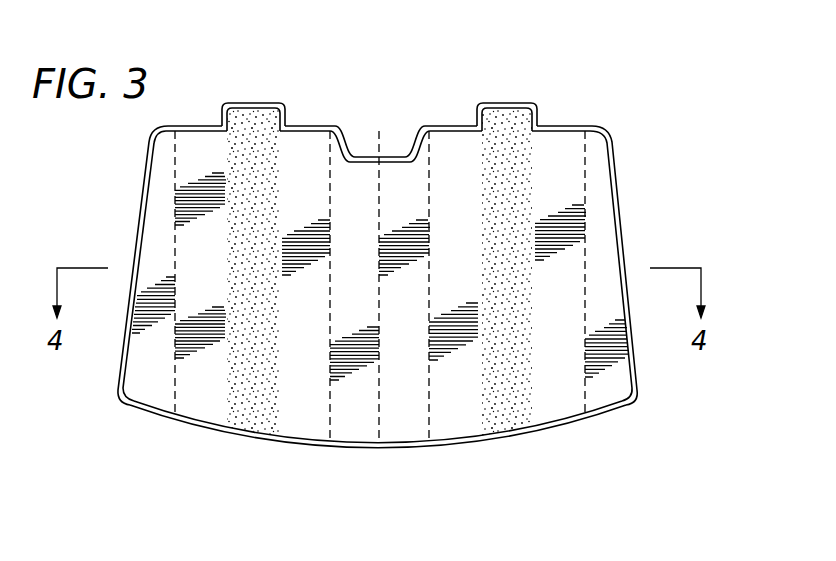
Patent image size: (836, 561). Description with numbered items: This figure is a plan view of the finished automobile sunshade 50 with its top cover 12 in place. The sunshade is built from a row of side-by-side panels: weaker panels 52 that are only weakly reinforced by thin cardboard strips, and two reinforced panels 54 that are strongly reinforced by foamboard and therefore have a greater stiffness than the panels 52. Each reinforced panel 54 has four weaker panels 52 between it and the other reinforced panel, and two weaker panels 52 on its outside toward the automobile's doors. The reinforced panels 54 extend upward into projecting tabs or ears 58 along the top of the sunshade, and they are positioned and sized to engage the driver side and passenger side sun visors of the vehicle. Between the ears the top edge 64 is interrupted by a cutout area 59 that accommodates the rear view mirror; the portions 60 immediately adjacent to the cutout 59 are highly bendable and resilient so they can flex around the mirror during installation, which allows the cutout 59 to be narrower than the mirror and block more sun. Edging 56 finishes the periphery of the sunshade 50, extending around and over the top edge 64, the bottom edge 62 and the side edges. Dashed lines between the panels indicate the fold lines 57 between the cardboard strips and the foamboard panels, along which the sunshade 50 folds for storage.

The automobile sunshade 50 is at (603, 67).
The top cover 12 is at (607, 218).
The weaker panels 52 is at (148, 397).
The reinforced panels 54 is at (253, 423).
The edging 56 is at (140, 217).
The fold lines 57 is at (582, 378).
The tabs or ears 58 is at (252, 108).
The cutout area 59 is at (365, 156).
The portions adjacent the rearview mirror cutout 60 is at (347, 136).
The bottom edge 62 is at (267, 442).
The top edge 64 is at (268, 103).